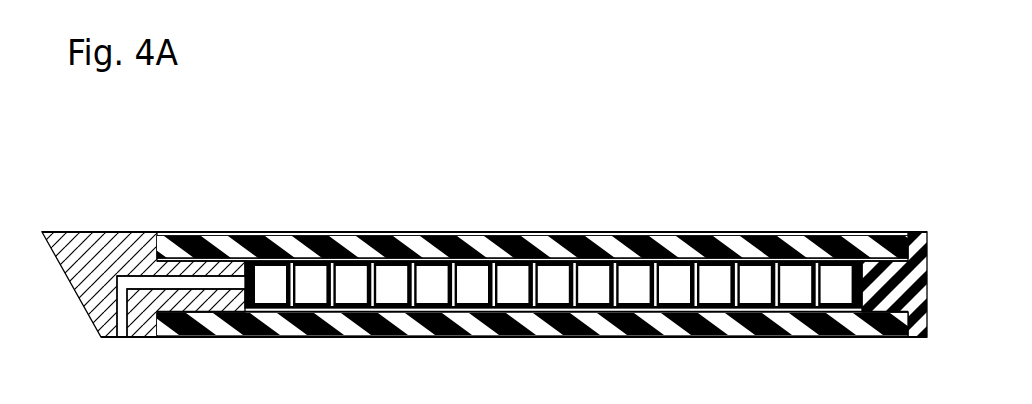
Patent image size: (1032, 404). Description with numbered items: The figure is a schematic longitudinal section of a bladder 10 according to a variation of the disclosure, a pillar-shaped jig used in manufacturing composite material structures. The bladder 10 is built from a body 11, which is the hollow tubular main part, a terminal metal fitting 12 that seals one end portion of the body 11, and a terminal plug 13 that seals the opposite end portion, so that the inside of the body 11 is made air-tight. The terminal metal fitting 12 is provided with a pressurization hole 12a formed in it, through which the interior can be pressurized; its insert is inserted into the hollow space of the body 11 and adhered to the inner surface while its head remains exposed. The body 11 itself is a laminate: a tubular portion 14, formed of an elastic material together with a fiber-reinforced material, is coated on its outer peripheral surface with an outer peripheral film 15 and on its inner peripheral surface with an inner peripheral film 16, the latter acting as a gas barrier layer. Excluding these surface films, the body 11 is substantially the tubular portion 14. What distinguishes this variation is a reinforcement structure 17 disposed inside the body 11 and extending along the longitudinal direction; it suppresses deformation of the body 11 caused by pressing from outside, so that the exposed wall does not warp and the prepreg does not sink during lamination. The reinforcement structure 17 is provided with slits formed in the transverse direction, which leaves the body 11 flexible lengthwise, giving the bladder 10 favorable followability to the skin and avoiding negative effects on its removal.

The bladder 10 is at (585, 186).
The body 11 is at (503, 135).
The terminal metal fitting 12 is at (117, 232).
The pressurization hole 12a is at (122, 332).
The terminal plug 13 is at (895, 270).
The tubular portion 14 is at (415, 232).
The outer peripheral film 15 is at (480, 232).
The inner peripheral film 16 is at (357, 232).
The reinforcement structure 17 is at (760, 268).